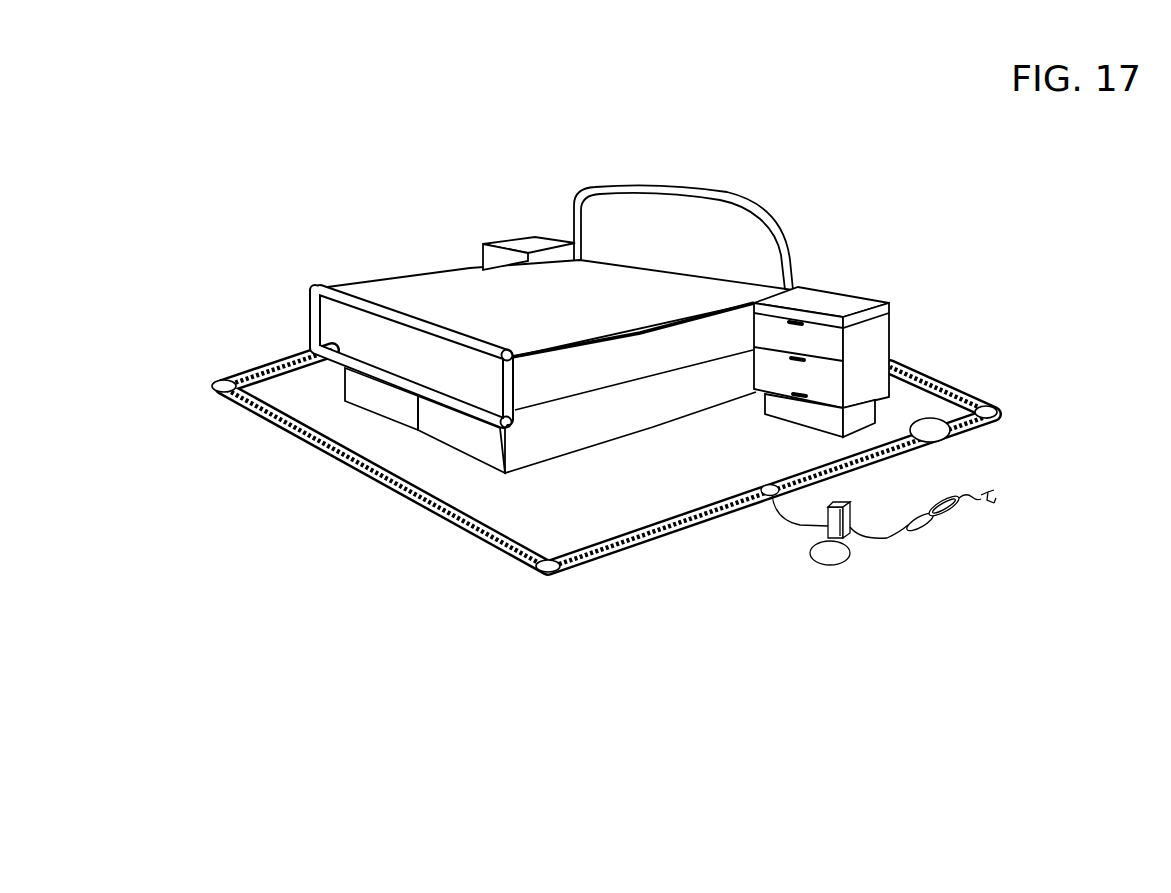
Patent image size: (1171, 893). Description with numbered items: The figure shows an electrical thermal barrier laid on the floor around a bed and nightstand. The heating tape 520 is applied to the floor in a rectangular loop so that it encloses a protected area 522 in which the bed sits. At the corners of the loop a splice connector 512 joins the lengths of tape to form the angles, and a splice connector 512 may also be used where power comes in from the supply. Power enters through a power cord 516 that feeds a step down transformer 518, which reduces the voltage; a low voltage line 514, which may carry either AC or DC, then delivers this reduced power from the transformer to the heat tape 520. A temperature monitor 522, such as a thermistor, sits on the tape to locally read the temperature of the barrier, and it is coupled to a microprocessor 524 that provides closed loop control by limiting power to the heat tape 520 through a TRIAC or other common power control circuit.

The splice connector 512 is at (547, 575).
The low voltage line 514 is at (823, 527).
The power cord 516 is at (884, 540).
The step down transformer 518 is at (837, 503).
The heating tape 520 is at (423, 507).
The protected area / temperature monitor 522 is at (524, 344).
The microprocessor 524 is at (838, 566).